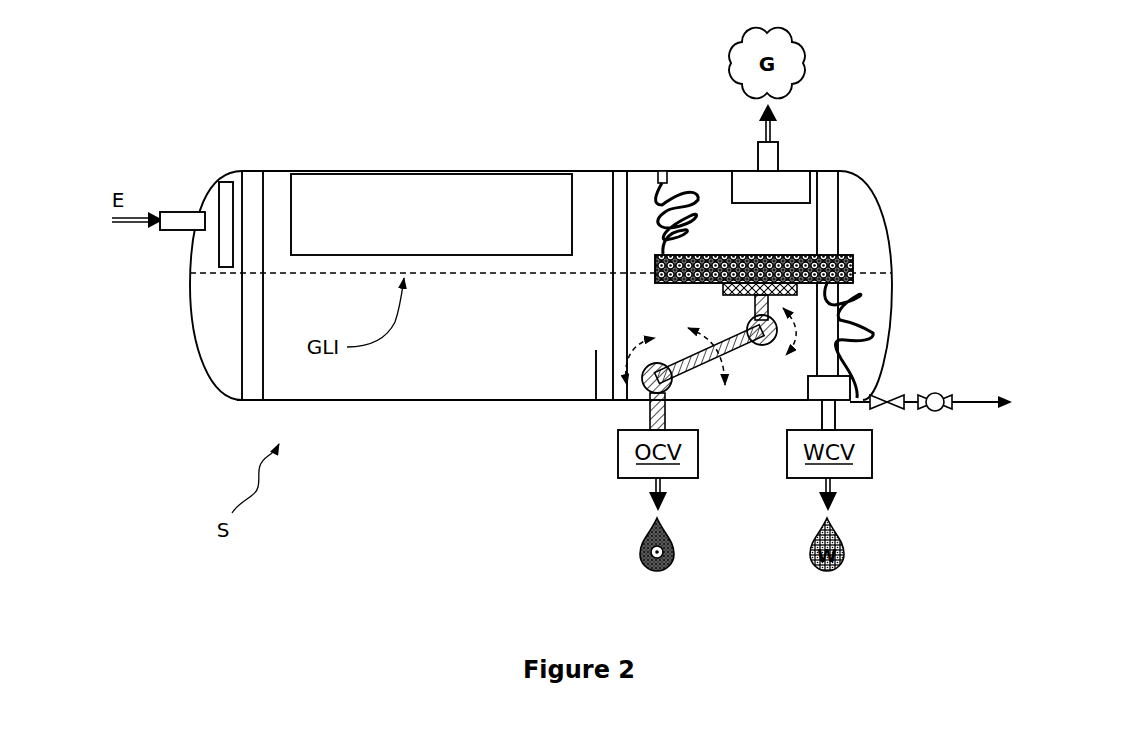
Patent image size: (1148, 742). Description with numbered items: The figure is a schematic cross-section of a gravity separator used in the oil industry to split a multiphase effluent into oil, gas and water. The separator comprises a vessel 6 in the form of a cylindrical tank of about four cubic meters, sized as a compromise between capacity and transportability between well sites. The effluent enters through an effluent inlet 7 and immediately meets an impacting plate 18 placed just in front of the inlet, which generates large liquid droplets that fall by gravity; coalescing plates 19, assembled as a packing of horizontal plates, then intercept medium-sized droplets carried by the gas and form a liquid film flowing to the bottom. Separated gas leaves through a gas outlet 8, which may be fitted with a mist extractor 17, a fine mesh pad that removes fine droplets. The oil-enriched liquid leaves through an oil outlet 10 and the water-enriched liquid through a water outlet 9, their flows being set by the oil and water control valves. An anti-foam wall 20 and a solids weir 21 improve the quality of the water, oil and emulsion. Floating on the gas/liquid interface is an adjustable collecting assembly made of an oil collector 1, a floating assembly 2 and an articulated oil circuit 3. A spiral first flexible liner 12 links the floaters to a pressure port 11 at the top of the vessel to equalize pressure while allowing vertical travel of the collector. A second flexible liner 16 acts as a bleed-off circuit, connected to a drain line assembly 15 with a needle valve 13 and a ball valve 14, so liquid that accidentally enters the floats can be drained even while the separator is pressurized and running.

The oil collector 1 is at (857, 262).
The floating assembly 2 is at (771, 281).
The oil circuit 3 is at (705, 388).
The vessel 6 is at (401, 170).
The effluent inlet 7 is at (185, 210).
The gas outlet 8 is at (777, 158).
The water outlet 9 is at (838, 418).
The oil outlet 10 is at (646, 417).
The pressure port 11 is at (661, 169).
The first flexible liner 12 is at (650, 206).
The needle valve 13 is at (891, 395).
The ball valve 14 is at (943, 391).
The drain line assembly 15 is at (948, 418).
The second flexible liner 16 is at (879, 333).
The mist extractor 17 is at (801, 173).
The impacting plate 18 is at (225, 180).
The coalescing plates 19 is at (440, 183).
The anti-foam wall 20 is at (610, 295).
The solids weir 21 is at (592, 367).